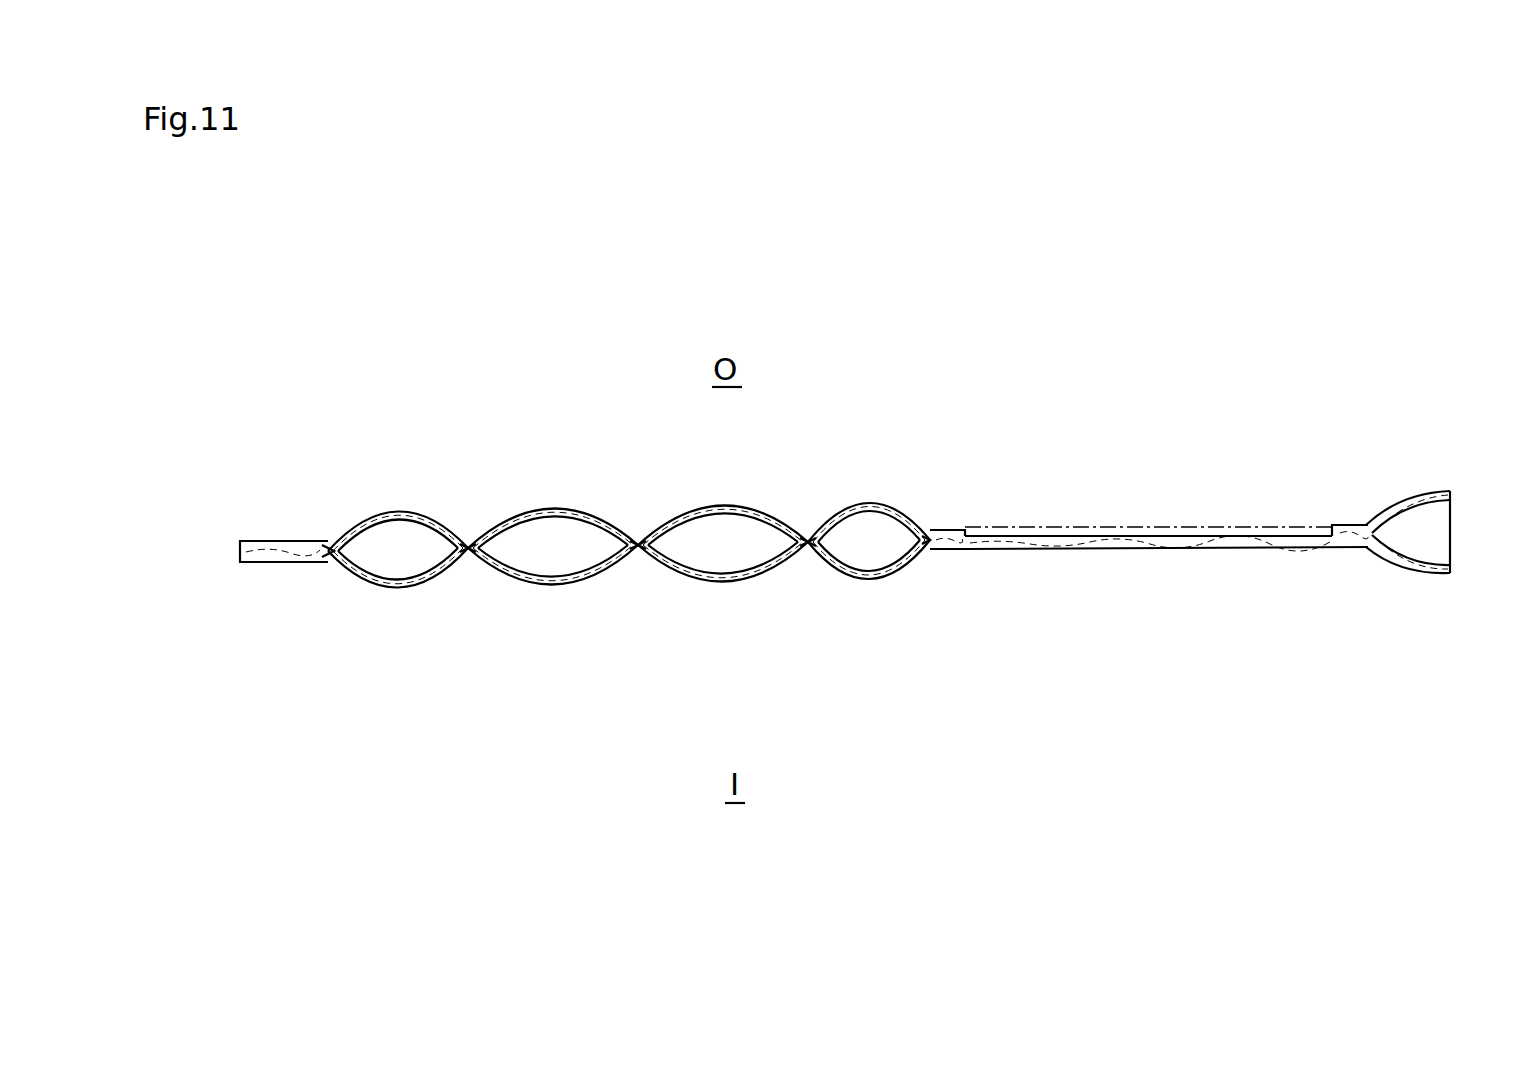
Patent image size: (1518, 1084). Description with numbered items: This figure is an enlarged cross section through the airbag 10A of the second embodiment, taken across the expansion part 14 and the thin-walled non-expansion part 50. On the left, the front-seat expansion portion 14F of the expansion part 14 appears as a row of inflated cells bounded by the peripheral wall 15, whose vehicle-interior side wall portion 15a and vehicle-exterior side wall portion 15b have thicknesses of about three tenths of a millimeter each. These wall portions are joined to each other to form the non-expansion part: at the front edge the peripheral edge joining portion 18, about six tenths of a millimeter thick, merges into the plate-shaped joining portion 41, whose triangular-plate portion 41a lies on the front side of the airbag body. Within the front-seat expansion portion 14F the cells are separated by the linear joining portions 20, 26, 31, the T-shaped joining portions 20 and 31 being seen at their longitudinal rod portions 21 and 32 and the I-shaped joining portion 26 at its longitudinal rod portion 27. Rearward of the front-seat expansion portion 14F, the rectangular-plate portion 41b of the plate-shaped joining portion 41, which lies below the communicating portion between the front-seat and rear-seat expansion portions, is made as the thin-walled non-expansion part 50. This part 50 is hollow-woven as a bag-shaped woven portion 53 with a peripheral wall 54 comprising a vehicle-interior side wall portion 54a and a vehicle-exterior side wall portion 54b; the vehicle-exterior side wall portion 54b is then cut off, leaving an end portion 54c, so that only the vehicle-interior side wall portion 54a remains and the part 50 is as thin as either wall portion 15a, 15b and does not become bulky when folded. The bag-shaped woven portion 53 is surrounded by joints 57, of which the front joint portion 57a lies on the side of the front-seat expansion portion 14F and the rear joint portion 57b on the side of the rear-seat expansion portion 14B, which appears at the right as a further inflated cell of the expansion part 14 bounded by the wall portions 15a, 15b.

The airbag 10A is at (868, 355).
The expansion part 14 is at (559, 566).
The front-seat expansion portion 14F is at (362, 495).
The rear-seat expansion portion 14B is at (1438, 478).
The peripheral wall 15 is at (527, 540).
The vehicle-interior side wall portion 15a is at (560, 588).
The vehicle-exterior side wall portion 15b is at (585, 512).
The peripheral edge joining portion 18 is at (318, 562).
The linear joining portion 20 is at (451, 660).
The longitudinal rod portion 21 is at (468, 560).
The linear joining portion 26 is at (650, 656).
The longitudinal rod portion 27 is at (638, 560).
The linear joining portion 31 is at (806, 655).
The longitudinal rod portion 32 is at (808, 560).
The plate-shaped joining portion 41 is at (258, 639).
The triangular-plate portion 41a is at (272, 562).
The rectangular-plate portion 41b is at (1180, 545).
The thin-walled non-expansion part 50 is at (1166, 517).
The bag-shaped woven portion 53 is at (1195, 378).
The peripheral wall 54 is at (1166, 421).
The vehicle-interior side wall portion 54a is at (1152, 537).
The vehicle-exterior side wall portion 54b is at (1093, 528).
The end portion 54c is at (1333, 525).
The joints 57 is at (937, 629).
The front joint portion 57a is at (932, 562).
The rear joint portion 57b is at (1350, 545).